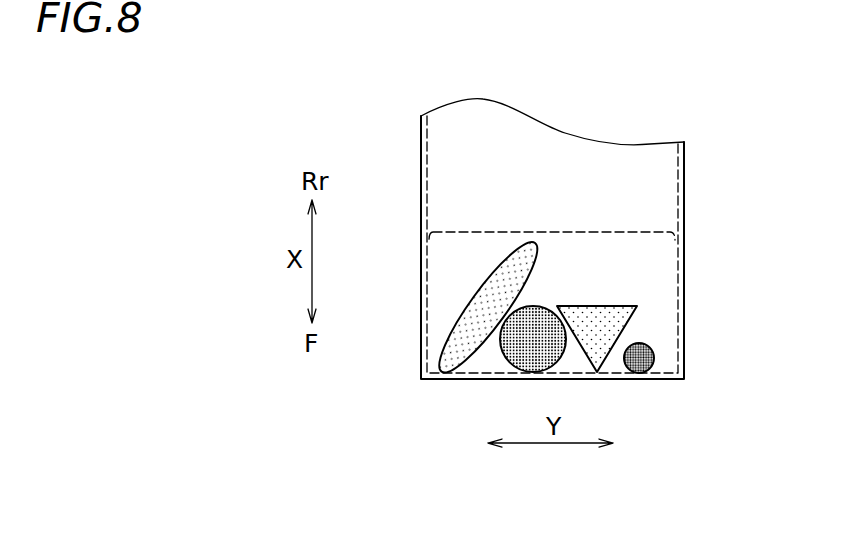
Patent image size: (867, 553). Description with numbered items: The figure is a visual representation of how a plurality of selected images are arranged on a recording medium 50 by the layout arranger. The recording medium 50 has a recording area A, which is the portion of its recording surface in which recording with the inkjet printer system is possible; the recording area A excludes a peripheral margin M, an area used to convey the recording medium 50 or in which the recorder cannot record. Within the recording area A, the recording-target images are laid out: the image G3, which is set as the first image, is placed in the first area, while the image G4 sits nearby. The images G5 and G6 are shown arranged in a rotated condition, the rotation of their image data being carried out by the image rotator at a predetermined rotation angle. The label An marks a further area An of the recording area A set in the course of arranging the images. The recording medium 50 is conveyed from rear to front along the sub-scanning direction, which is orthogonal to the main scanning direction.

The recording medium 50 is at (643, 143).
The margin M is at (679, 248).
The recording area A is at (553, 157).
The image G5 is at (465, 310).
The image G3 is at (562, 358).
The image G6 is at (613, 306).
The image G4 is at (645, 347).
The bottom region An is at (488, 357).